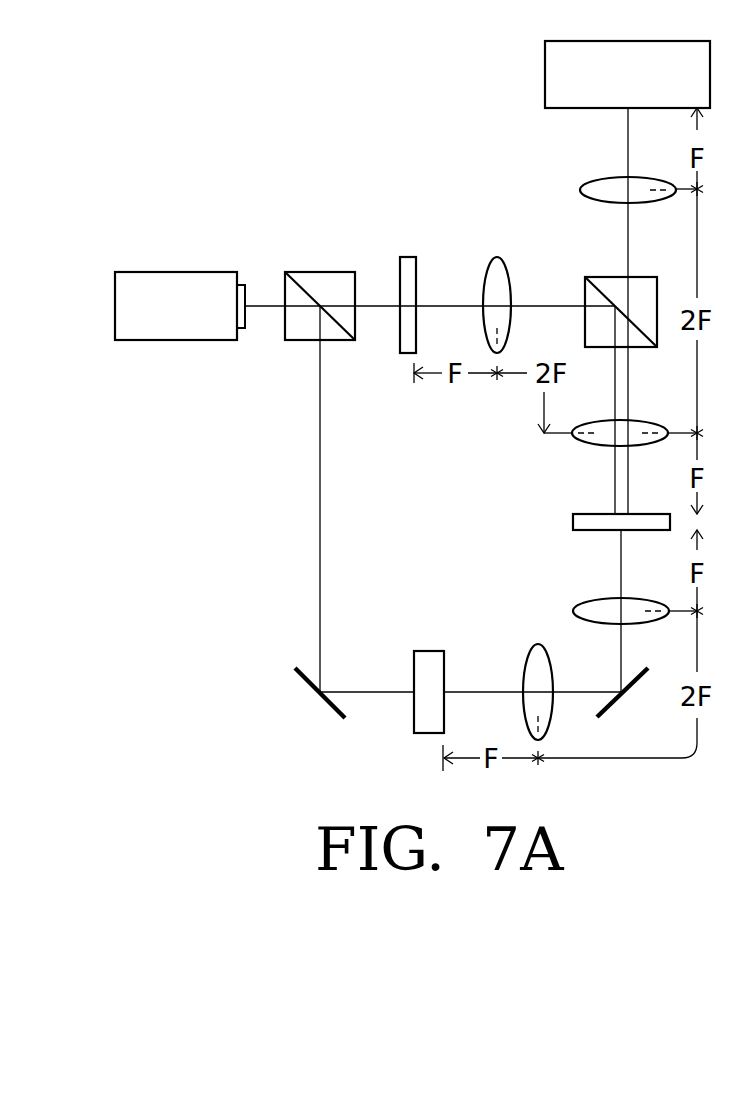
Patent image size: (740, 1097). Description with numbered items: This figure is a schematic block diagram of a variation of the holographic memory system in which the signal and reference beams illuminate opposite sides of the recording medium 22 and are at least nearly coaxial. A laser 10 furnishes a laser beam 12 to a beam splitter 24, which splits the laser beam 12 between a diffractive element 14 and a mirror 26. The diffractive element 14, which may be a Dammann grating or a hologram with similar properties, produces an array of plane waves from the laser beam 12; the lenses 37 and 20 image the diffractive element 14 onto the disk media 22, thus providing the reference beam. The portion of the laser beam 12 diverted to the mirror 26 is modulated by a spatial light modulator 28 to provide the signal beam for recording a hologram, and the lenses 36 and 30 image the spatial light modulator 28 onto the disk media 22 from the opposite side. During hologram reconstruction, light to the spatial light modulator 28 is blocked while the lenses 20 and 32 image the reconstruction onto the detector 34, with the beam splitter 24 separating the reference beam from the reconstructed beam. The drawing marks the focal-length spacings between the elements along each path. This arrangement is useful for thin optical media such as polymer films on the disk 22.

The laser 10 is at (170, 272).
The laser beam 12 is at (273, 307).
The diffractive element 14 is at (405, 257).
The spherical lens 20 is at (656, 420).
The optical recording medium 22 is at (573, 520).
The beam splitter 24 is at (327, 272).
The mirror 26 is at (304, 682).
The spatial light modulator 28 is at (420, 651).
The lens 30 is at (585, 598).
The lens 32 is at (588, 178).
The detector 34 is at (545, 52).
The lens 36 is at (527, 648).
The lens 37 is at (498, 258).